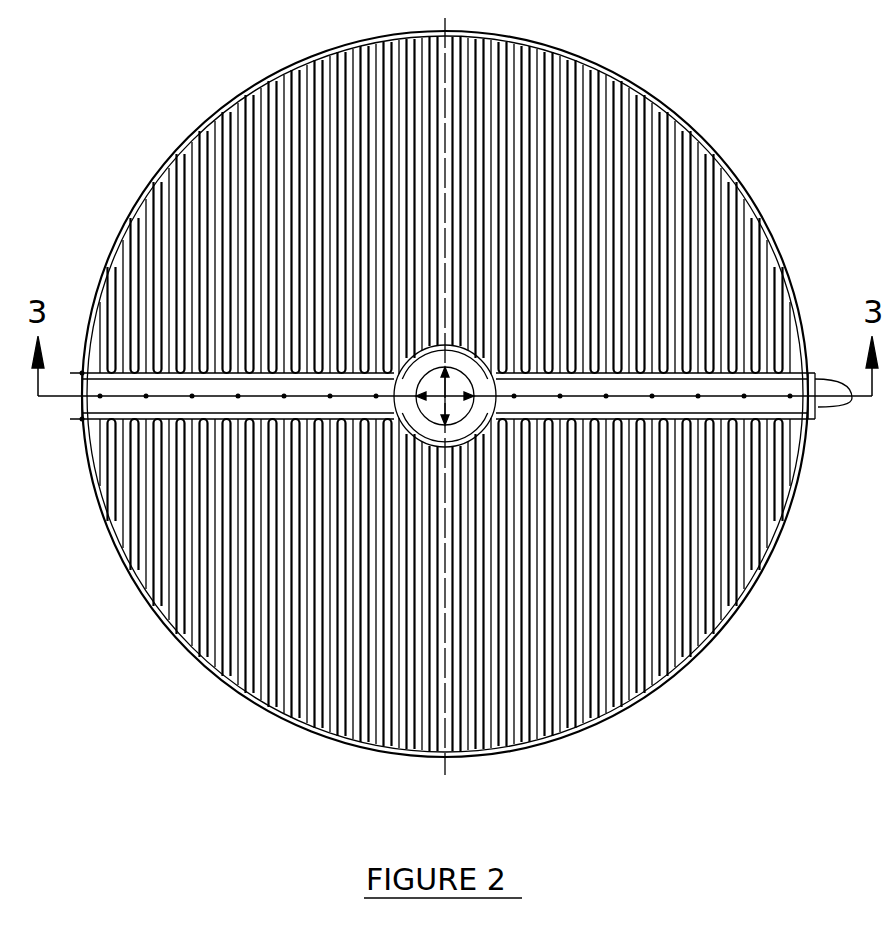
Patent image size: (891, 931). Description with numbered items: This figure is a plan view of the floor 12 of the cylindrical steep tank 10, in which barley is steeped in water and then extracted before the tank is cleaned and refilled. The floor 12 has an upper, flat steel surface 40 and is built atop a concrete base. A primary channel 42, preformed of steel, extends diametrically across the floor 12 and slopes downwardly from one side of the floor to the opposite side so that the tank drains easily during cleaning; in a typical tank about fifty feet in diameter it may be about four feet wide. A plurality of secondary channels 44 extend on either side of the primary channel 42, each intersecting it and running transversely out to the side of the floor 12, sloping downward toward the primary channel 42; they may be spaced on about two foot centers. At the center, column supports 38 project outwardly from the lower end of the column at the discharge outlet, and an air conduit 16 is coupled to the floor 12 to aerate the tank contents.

The steep tank 10 is at (258, 713).
The floor 12 is at (307, 718).
The air conduit 16 is at (823, 407).
The column supports 38 is at (437, 373).
The upper, flat steel surface 40 is at (147, 196).
The primary channel 42 is at (127, 398).
The secondary channels 44 is at (195, 132).